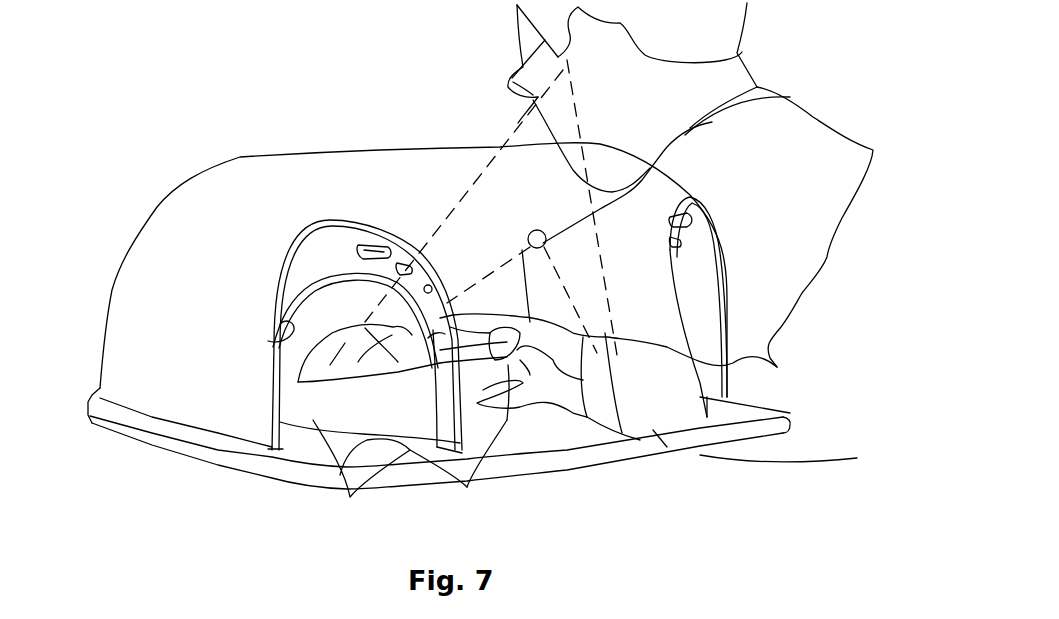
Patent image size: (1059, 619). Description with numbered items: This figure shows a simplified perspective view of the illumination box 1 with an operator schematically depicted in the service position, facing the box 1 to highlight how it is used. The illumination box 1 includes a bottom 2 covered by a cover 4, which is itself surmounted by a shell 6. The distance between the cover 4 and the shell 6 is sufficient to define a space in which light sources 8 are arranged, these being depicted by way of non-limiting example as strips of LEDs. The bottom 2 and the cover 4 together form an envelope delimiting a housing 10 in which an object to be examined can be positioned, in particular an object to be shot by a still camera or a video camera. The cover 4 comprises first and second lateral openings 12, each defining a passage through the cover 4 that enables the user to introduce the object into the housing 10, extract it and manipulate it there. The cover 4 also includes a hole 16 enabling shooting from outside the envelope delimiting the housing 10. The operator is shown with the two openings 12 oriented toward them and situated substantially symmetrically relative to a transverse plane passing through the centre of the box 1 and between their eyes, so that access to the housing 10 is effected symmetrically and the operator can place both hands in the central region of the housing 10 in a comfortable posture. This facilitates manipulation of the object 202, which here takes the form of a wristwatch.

The illumination box 1 is at (172, 537).
The bottom 2 is at (102, 421).
The cover 4 is at (312, 265).
The shell 6 is at (181, 228).
The light sources 8 is at (370, 245).
The housing 10 is at (343, 289).
The lateral openings 12 is at (268, 341).
The hole 16 is at (529, 233).
The object 202 is at (428, 338).